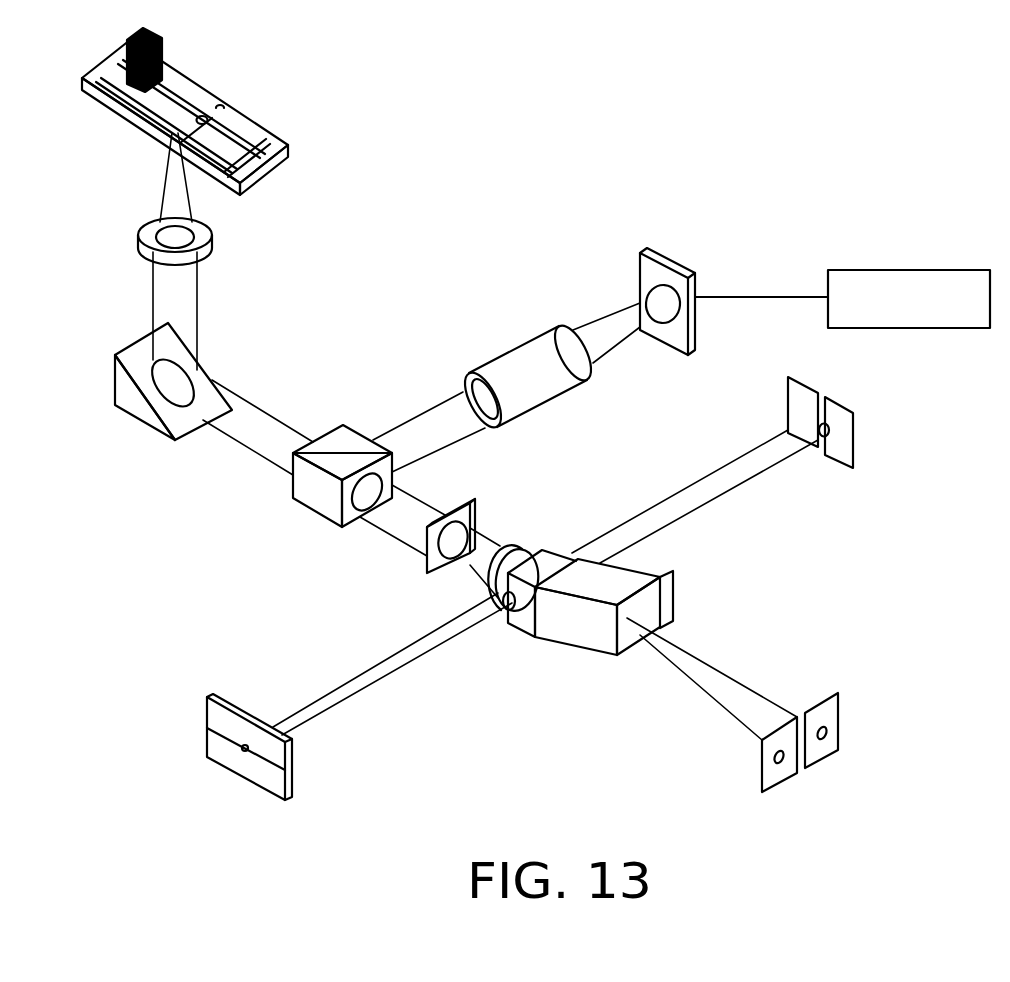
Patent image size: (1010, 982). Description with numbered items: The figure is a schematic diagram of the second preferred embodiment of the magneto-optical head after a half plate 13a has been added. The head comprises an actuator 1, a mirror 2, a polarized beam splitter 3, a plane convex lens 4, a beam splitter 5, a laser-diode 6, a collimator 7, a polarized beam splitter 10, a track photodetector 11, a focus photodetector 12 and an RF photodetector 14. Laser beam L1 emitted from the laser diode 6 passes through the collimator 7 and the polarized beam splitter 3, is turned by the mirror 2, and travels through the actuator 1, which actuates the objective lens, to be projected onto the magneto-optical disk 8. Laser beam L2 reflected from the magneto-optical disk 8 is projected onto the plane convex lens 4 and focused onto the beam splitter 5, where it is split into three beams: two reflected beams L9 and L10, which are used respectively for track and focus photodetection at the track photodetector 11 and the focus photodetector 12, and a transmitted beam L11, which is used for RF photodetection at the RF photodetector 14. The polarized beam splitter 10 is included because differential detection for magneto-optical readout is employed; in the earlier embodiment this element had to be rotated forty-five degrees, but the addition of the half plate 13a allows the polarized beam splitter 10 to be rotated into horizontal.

The actuator 1 is at (148, 235).
The mirror 2 is at (125, 383).
The polarized beam splitter 3 is at (337, 437).
The plane convex lens 4 is at (517, 552).
The beam splitter 5 is at (522, 620).
The laser-diode 6 is at (688, 272).
The collimator 7 is at (523, 362).
The magneto-optical disk 8 is at (262, 130).
The polarized beam splitter 10 is at (582, 633).
The track photodetector 11 is at (218, 718).
The focus photodetector 12 is at (843, 440).
The half plate 13a is at (437, 573).
The RF photodetector 14 is at (787, 773).
The laser beam L1 is at (620, 333).
The laser beam L2 is at (400, 522).
The reflected beam L9 is at (375, 673).
The reflected beam L10 is at (672, 513).
The transmitted beam L11 is at (692, 650).